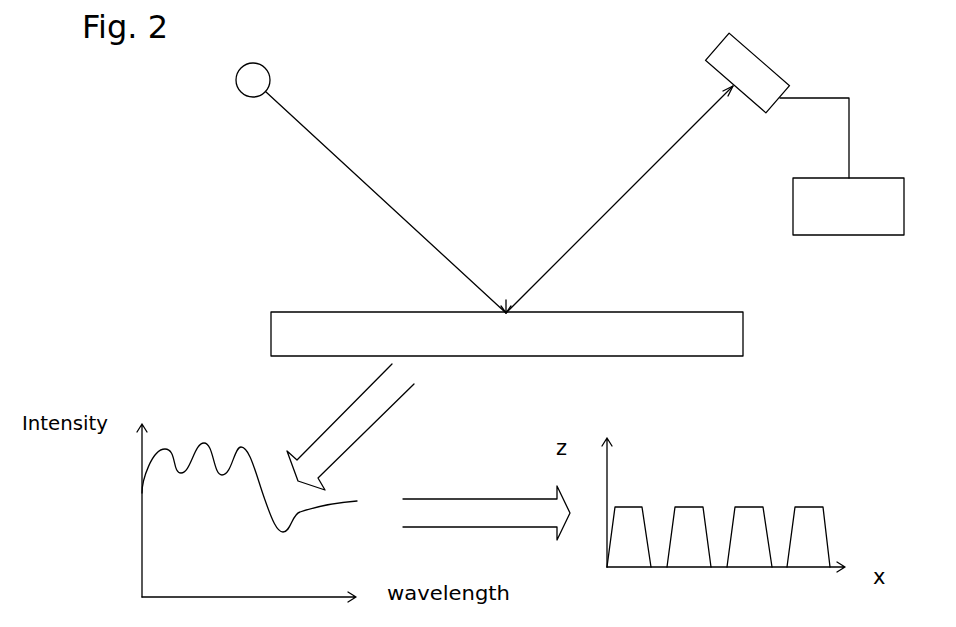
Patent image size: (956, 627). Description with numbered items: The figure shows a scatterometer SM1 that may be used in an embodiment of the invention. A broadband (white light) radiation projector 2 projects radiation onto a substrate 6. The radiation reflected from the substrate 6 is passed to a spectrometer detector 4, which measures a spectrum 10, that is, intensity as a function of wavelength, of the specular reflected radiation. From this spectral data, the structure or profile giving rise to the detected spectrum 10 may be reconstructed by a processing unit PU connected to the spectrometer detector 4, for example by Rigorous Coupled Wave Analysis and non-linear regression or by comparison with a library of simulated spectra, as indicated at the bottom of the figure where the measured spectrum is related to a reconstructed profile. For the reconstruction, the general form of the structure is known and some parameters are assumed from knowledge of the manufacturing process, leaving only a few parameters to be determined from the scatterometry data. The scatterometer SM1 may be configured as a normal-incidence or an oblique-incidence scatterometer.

The broadband radiation projector 2 is at (270, 80).
The spectrometer detector 4 is at (775, 72).
The substrate 6 is at (514, 345).
The spectrum 10 is at (652, 118).
The scatterometer SM1 is at (223, 192).
The processing unit PU is at (842, 166).